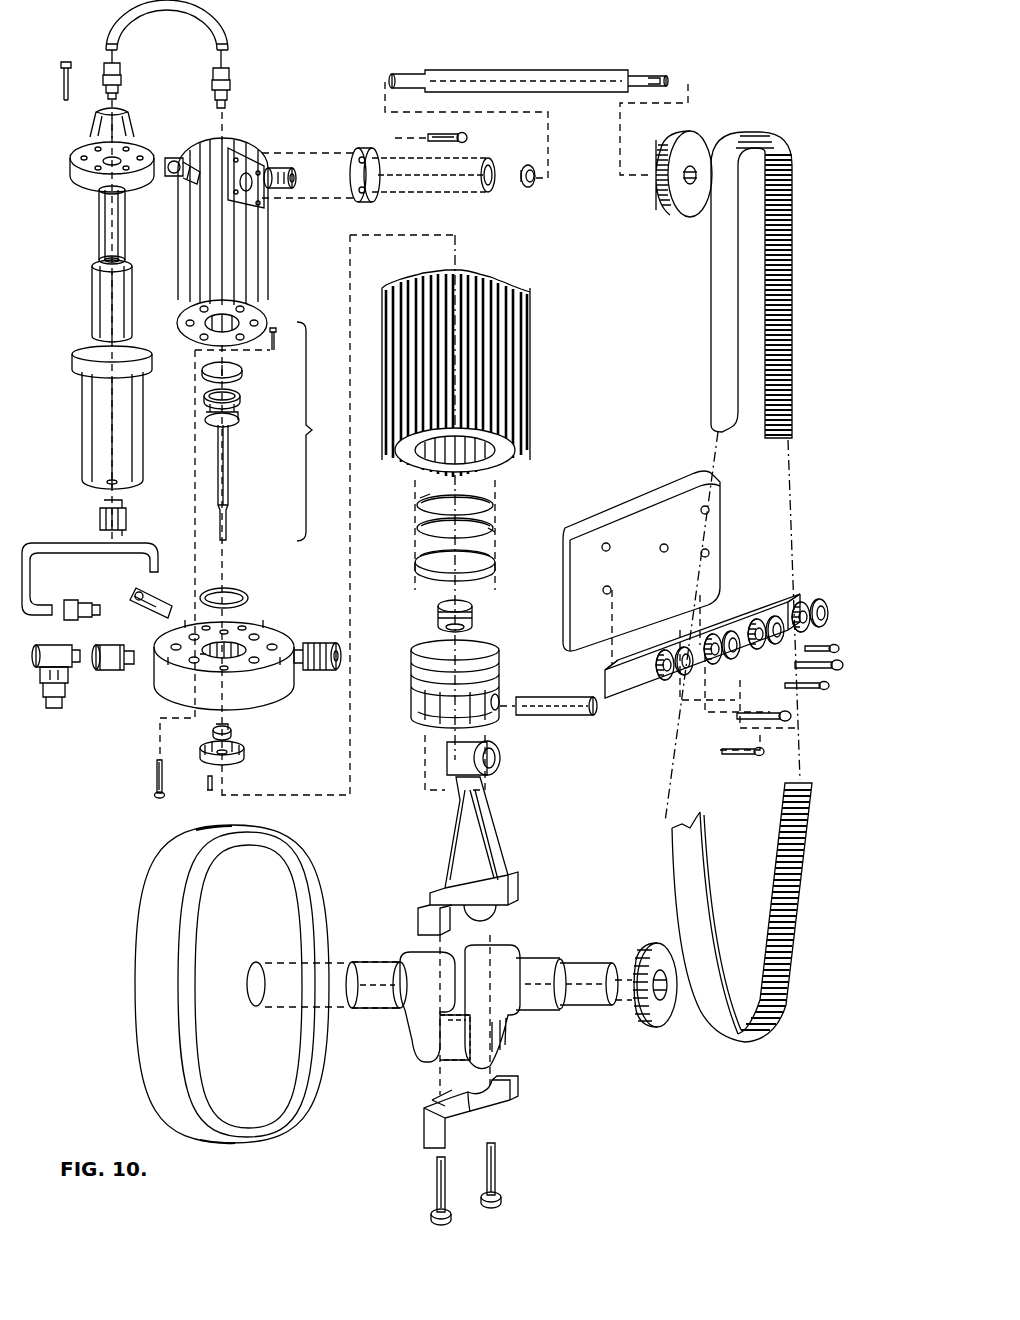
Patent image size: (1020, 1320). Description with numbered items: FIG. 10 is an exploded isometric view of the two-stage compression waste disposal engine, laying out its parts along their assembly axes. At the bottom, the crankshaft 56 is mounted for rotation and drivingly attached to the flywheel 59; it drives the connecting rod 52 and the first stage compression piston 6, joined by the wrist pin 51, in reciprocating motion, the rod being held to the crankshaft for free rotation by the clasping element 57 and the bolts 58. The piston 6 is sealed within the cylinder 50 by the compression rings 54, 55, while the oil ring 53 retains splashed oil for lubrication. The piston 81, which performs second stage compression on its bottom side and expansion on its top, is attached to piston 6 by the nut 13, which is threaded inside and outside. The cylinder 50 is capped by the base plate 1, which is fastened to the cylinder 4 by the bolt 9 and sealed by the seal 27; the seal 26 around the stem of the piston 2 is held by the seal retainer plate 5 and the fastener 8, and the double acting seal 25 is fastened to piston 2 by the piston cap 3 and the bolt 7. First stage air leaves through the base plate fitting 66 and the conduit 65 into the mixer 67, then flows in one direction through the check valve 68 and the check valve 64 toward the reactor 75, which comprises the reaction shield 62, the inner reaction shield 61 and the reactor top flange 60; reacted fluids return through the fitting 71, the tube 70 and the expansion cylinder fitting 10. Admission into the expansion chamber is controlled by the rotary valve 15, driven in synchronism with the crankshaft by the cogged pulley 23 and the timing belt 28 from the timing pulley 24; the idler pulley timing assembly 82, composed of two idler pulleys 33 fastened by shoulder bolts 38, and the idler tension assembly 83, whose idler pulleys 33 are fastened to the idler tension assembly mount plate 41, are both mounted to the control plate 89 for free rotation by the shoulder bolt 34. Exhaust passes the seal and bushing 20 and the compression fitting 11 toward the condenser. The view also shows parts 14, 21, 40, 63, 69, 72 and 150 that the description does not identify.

The base plate 1 is at (272, 638).
The piston 2 is at (232, 472).
The piston cap 3 is at (242, 372).
The cylinder 4 is at (265, 283).
The seal retainer plate 5 is at (246, 752).
The first stage compression piston 6 is at (412, 706).
The bolt 7 is at (278, 338).
The fastener 8 is at (212, 792).
The bolt 9 is at (162, 797).
The expansion cylinder fitting 10 is at (232, 82).
The compression fitting 11 is at (172, 158).
The nut 13 is at (474, 611).
The sleeve 14 is at (455, 196).
The rotary valve 15 is at (515, 70).
The seal and bushing 20 is at (298, 182).
The nut 21 is at (530, 188).
The cogged pulley 23 is at (674, 216).
The timing pulley 24 is at (633, 1020).
The double acting seal 25 is at (242, 402).
The seal 26 is at (234, 732).
The seal 27 is at (250, 594).
The timing belt 28 is at (710, 310).
The idler pulleys 33 is at (800, 604).
The shoulder bolt 34 is at (843, 668).
The shoulder bolts 38 is at (838, 644).
The bar end 40 is at (668, 655).
The idler tension assembly mount plate 41 is at (818, 612).
The cylinder 50 is at (530, 355).
The wrist pin 51 is at (565, 697).
The connecting rod 52 is at (490, 842).
The oil ring 53 is at (497, 571).
The compression ring 54 is at (495, 530).
The compression ring 55 is at (495, 505).
The crankshaft 56 is at (512, 1036).
The clasping element 57 is at (515, 1098).
The bolts 58 is at (431, 1206).
The flywheel 59 is at (310, 1096).
The reactor top flange 60 is at (75, 152).
The inner reaction shield 61 is at (98, 230).
The reaction shield 62 is at (93, 305).
The filter housing 63 is at (75, 418).
The check valve 64 is at (128, 518).
The conduit 65 is at (72, 543).
The base plate fitting 66 is at (150, 598).
The mixer 67 is at (80, 662).
The check valve 68 is at (105, 672).
The knurled nut 69 is at (328, 642).
The tube 70 is at (128, 20).
The fitting 71 is at (102, 70).
The screw 72 is at (64, 100).
The reactor 75 is at (72, 456).
The piston 81 is at (318, 431).
The idler pulley timing assembly 82 is at (629, 706).
The idler tension assembly 83 is at (810, 590).
The control plate 89 is at (648, 480).
The fitting 150 is at (95, 603).